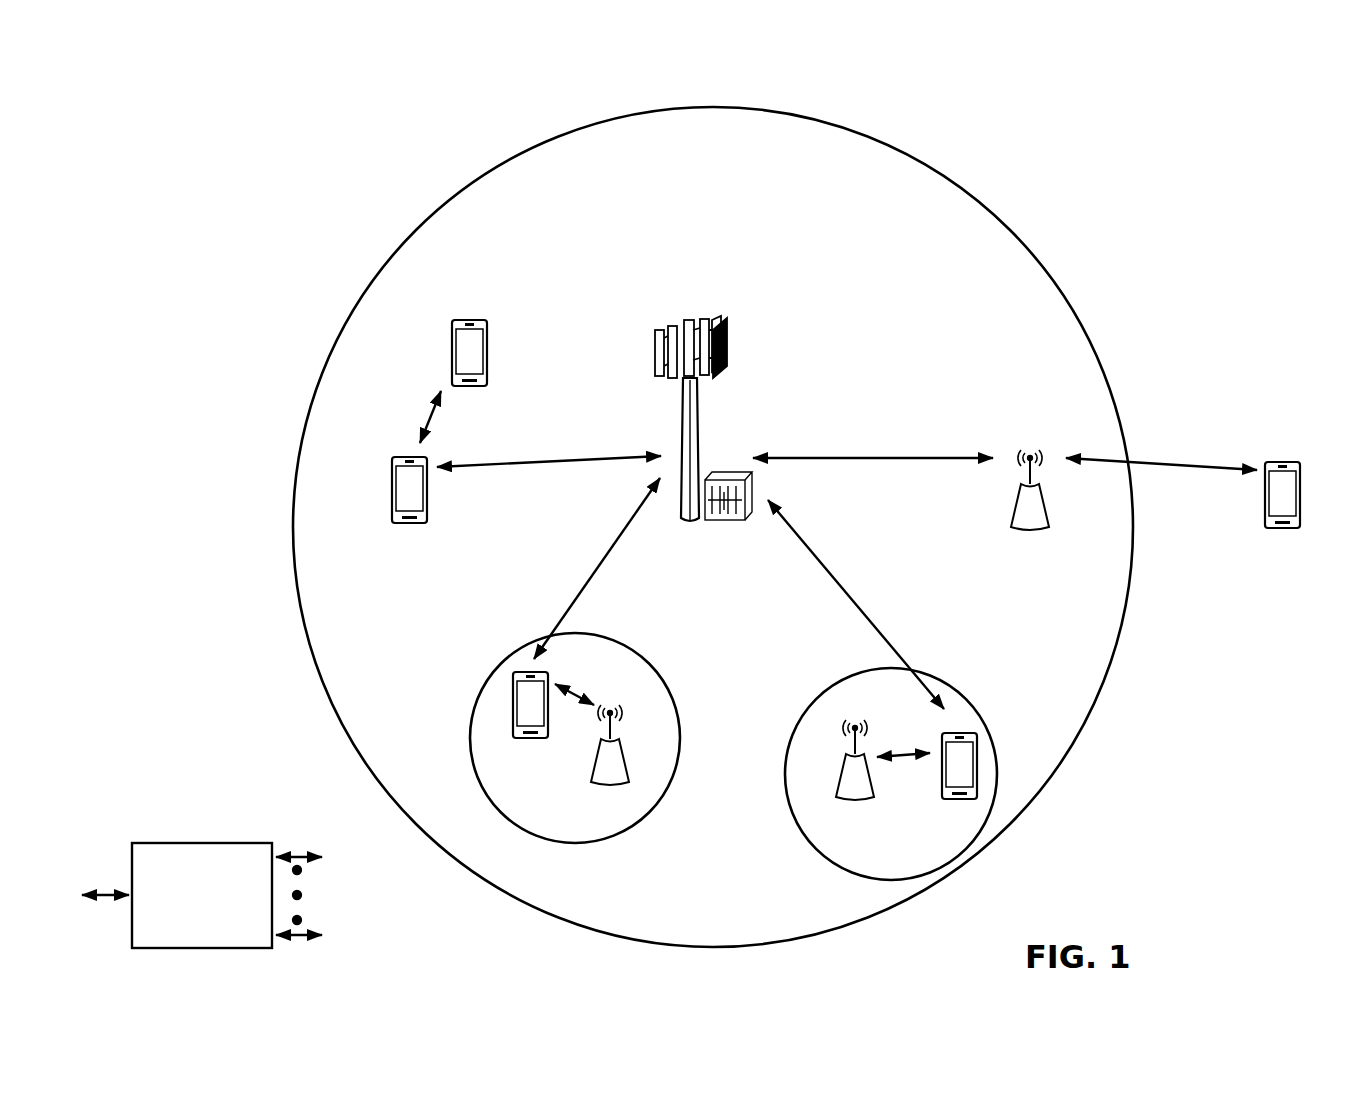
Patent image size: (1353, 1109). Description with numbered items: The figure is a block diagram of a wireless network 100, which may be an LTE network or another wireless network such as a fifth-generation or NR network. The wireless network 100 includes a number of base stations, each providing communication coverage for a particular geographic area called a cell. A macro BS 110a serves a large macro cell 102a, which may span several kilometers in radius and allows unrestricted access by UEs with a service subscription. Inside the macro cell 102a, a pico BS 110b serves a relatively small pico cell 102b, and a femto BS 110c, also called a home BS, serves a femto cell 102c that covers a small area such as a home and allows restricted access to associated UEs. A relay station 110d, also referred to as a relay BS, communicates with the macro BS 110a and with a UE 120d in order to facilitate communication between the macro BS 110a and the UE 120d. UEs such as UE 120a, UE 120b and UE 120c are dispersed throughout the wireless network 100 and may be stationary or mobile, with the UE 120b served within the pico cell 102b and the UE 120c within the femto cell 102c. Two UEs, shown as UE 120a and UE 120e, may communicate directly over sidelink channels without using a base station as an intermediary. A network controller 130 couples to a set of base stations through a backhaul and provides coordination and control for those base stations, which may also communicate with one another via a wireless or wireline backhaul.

The wireless network 100 is at (183, 102).
The macro cell 102a is at (993, 210).
The pico cell 102b is at (664, 672).
The femto cell 102c is at (830, 685).
The macro BS 110a is at (713, 310).
The pico BS 110b is at (629, 767).
The femto BS 110c is at (839, 781).
The relay station 110d is at (1031, 447).
The UE 120a is at (393, 488).
The UE 120b is at (518, 740).
The UE 120c is at (943, 800).
The UE 120d is at (1296, 462).
The UE 120e is at (452, 342).
The network controller 130 is at (201, 842).